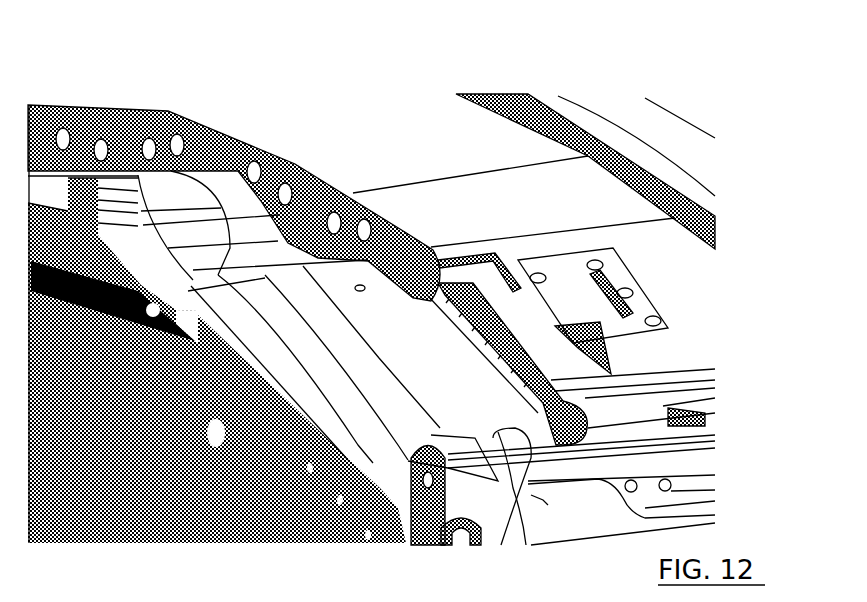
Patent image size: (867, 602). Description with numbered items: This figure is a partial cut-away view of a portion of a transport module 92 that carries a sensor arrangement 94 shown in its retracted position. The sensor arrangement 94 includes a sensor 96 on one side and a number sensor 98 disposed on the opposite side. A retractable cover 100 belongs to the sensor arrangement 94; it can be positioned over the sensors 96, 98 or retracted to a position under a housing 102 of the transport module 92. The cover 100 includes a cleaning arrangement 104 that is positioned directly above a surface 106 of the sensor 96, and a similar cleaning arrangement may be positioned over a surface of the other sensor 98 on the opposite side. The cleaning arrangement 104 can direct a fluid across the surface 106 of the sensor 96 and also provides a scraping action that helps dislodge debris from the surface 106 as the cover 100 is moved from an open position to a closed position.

The transport module 92 is at (496, 70).
The sensor arrangement 94 is at (216, 190).
The sensor 96 is at (479, 502).
The number sensor 98 is at (33, 165).
The retractable cover 100 is at (690, 278).
The housing 102 is at (690, 150).
The cleaning arrangement 104 is at (575, 350).
The surface 106 is at (409, 352).